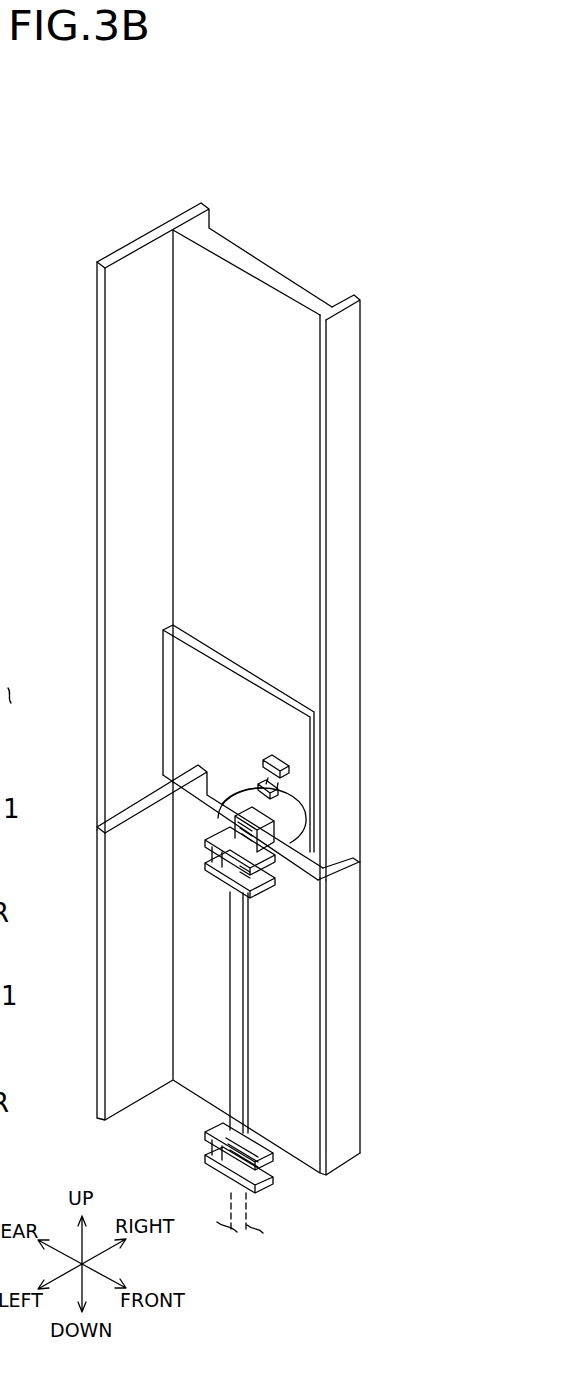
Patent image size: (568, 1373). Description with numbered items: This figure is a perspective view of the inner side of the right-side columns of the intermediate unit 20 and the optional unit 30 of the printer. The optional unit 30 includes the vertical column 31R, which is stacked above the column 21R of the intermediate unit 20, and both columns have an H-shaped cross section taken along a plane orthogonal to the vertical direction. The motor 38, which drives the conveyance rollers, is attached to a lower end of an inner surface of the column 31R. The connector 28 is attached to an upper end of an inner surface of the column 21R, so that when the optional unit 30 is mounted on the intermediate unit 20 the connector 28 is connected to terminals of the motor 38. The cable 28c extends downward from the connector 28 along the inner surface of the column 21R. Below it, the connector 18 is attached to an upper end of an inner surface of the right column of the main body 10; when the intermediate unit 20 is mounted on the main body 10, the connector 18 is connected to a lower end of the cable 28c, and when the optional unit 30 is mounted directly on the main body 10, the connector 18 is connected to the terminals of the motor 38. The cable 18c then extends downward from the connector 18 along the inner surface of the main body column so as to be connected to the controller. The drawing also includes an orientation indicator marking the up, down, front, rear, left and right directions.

The main body 10 is at (18, 1045).
The connector 18 is at (207, 1148).
The cable 18c is at (227, 1198).
The intermediate unit 20 is at (17, 769).
The column 21R is at (359, 1040).
The connector 28 is at (213, 872).
The cable 28c is at (237, 935).
The optional unit 30 is at (390, 430).
The column 31R is at (360, 556).
The motor 38 is at (298, 824).